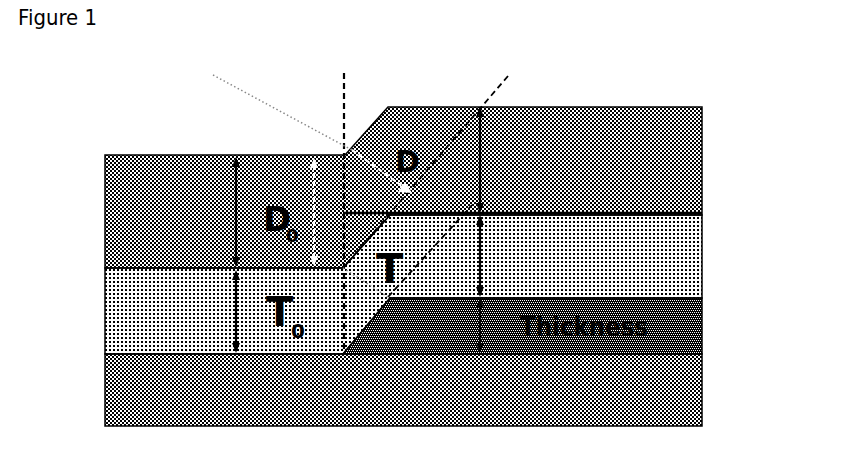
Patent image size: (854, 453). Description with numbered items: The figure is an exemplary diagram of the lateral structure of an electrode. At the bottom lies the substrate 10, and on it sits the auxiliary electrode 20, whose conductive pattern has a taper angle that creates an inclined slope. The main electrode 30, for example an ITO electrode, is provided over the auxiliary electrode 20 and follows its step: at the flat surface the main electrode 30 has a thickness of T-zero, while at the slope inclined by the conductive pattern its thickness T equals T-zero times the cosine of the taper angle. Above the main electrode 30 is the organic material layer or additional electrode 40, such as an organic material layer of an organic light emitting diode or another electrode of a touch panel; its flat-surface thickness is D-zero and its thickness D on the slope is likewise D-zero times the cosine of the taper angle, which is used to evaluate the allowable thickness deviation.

The substrate 10 is at (683, 395).
The auxiliary electrode 20 is at (683, 327).
The main electrode 30 is at (683, 253).
The organic material layer or additional electrode 40 is at (683, 145).